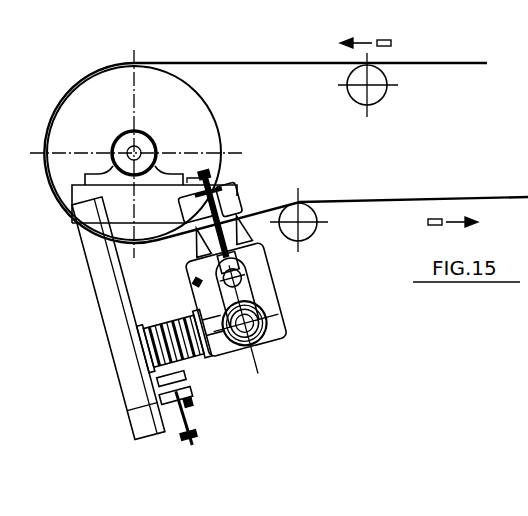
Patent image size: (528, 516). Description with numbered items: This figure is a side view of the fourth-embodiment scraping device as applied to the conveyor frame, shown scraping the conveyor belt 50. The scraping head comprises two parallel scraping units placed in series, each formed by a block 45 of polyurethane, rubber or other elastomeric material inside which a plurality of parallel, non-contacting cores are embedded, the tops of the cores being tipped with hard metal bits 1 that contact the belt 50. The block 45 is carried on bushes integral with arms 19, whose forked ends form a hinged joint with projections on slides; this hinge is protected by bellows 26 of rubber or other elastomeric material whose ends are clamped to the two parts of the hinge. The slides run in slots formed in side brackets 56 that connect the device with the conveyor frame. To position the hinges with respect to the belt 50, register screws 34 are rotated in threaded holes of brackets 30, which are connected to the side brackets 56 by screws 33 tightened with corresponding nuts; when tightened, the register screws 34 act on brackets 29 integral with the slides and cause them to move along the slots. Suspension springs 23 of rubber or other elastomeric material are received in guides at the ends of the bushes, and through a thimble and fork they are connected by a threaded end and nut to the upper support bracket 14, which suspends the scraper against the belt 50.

The hard metal bits 1 is at (202, 228).
The upper support bracket 14 is at (228, 205).
The arms 19 is at (218, 338).
The suspension springs 23 is at (260, 302).
The bellows 26 is at (188, 363).
The brackets 29 is at (170, 377).
The brackets 30 is at (167, 400).
The screws 33 is at (172, 410).
The register screws 34 is at (188, 420).
The block 45 is at (198, 243).
The conveyor belt 50 is at (272, 64).
The side brackets 56 is at (117, 315).